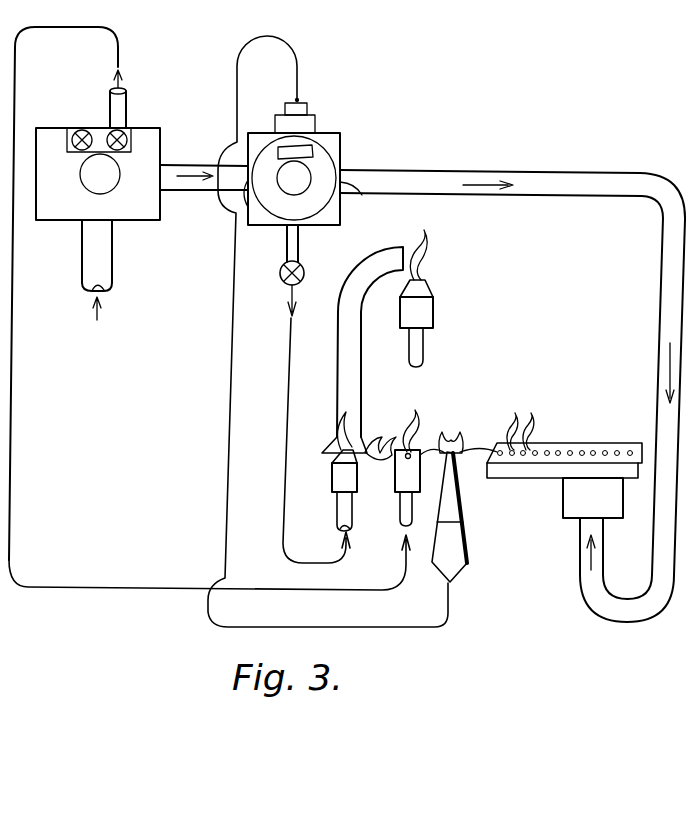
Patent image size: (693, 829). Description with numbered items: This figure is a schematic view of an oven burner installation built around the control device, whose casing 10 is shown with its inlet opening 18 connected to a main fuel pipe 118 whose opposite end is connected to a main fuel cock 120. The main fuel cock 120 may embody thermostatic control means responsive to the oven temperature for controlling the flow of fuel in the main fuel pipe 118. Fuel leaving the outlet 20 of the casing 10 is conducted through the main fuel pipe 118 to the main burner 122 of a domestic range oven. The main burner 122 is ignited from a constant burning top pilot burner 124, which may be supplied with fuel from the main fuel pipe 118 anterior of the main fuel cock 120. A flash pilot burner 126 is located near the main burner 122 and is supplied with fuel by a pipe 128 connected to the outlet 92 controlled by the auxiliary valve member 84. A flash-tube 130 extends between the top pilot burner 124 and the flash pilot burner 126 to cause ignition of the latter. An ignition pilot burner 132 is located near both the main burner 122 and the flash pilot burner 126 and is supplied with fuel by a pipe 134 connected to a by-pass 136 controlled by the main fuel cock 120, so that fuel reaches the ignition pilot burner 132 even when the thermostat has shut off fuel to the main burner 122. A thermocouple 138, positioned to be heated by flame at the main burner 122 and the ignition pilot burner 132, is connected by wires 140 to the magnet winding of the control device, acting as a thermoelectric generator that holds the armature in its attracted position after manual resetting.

The casing 10 is at (343, 148).
The inlet opening 18 is at (248, 208).
The outlet 20 is at (512, 396).
The auxiliary valve member 84 is at (303, 273).
The outlet 92 is at (292, 316).
The main fuel pipe 118 is at (187, 165).
The main fuel cock 120 is at (146, 211).
The main burner 122 is at (573, 503).
The top pilot burner 124 is at (426, 314).
The flash pilot burner 126 is at (340, 478).
The pipe 128 is at (289, 386).
The flash-tube 130 is at (352, 388).
The ignition pilot burner 132 is at (400, 478).
The pipe 134 is at (133, 578).
The by-pass 136 is at (120, 127).
The thermocouple 138 is at (465, 525).
The wires 140 is at (231, 468).